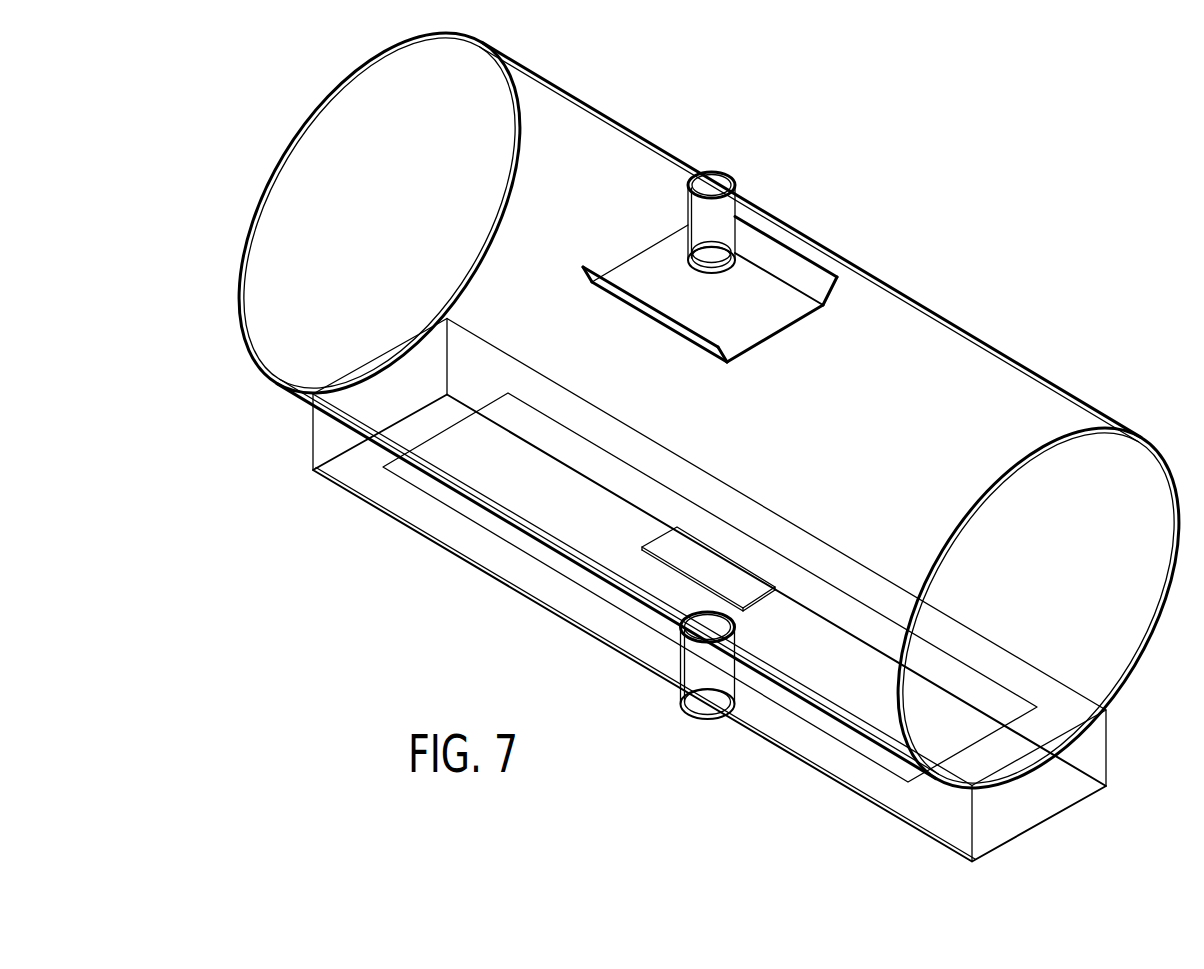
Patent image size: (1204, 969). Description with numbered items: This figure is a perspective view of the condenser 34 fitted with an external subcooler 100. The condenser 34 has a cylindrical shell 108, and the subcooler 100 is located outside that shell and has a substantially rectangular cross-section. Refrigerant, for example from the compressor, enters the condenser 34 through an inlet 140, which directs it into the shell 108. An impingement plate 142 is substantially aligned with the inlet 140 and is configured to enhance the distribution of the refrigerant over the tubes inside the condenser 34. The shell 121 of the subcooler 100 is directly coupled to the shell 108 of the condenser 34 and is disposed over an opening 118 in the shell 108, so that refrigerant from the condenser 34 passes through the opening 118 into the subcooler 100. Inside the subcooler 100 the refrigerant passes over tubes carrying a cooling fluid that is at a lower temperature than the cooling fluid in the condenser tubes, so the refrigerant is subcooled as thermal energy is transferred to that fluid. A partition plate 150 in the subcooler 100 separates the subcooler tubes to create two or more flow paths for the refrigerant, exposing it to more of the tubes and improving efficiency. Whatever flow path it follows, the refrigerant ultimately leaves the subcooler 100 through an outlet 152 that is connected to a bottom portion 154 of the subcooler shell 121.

The condenser 34 is at (602, 92).
The external subcooler 100 is at (447, 589).
The shell of the condenser 108 is at (1045, 379).
The opening of the shell 118 is at (707, 567).
The shell of the subcooler 121 is at (1037, 823).
The inlet 140 is at (722, 180).
The impingement plate 142 is at (772, 296).
The partition plate 150 is at (815, 729).
The outlet 152 is at (707, 722).
The bottom portion of the subcooler shell 154 is at (675, 695).